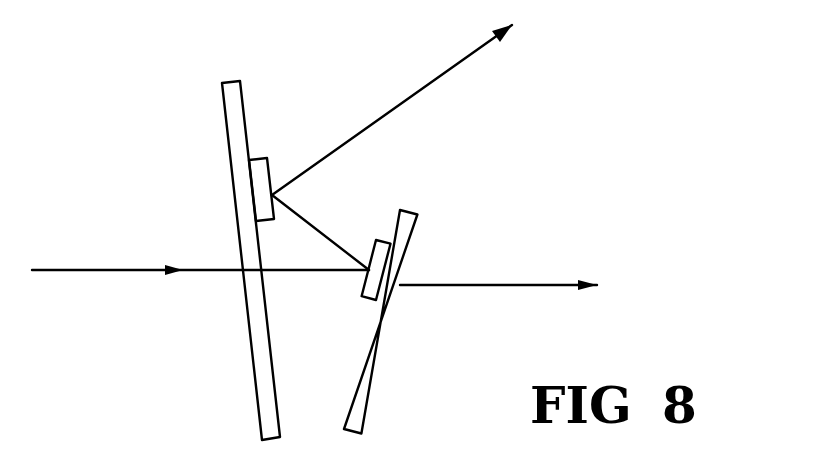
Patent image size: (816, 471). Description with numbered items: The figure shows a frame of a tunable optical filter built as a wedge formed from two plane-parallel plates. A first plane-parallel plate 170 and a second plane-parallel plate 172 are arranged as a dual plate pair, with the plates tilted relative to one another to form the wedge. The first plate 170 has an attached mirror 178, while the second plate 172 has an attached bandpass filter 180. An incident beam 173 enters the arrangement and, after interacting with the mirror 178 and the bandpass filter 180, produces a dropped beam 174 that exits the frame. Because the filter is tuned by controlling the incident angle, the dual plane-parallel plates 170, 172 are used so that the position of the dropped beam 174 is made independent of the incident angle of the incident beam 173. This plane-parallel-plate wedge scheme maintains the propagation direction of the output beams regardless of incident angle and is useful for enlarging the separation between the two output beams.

The plane-parallel plate 170 is at (228, 143).
The plane-parallel plate 172 is at (412, 243).
The incident beam 173 is at (103, 270).
The dropped beam 174 is at (560, 288).
The mirror 178 is at (270, 170).
The bandpass filter 180 is at (375, 243).